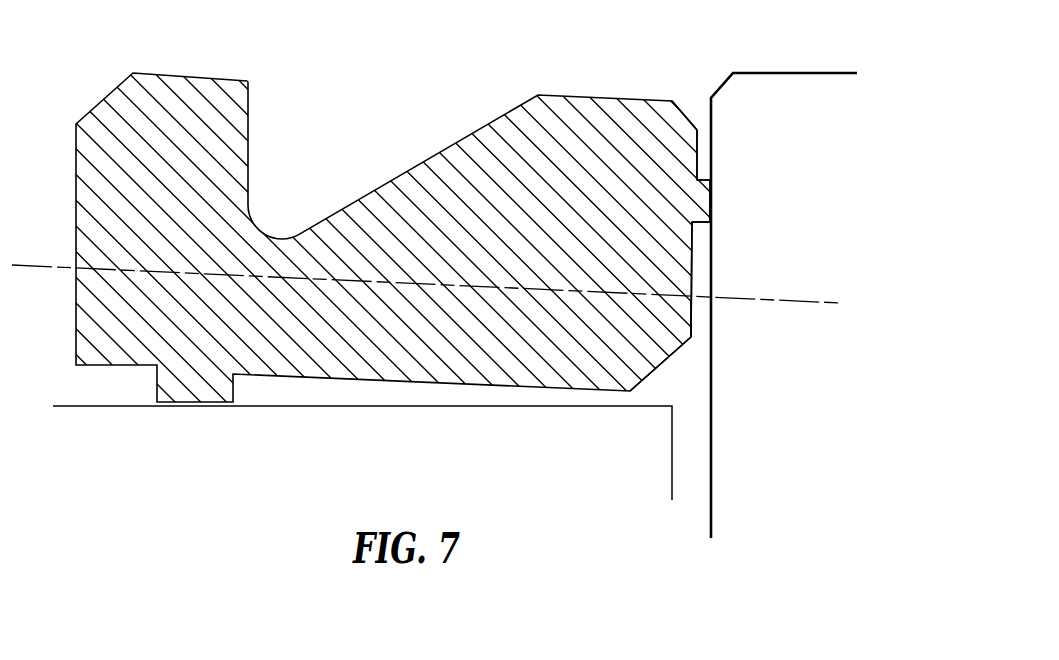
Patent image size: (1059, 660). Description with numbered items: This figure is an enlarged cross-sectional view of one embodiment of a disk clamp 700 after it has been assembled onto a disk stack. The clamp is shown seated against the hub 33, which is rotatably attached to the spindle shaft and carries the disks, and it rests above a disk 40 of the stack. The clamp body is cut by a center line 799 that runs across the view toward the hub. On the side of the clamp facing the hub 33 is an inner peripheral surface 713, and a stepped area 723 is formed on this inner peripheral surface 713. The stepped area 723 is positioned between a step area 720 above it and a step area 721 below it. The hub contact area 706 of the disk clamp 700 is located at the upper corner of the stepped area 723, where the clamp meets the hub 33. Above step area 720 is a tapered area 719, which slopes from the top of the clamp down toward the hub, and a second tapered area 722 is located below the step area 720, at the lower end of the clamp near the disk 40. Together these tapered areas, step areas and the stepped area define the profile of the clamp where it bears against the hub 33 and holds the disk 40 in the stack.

The disk clamp 700 is at (603, 97).
The tapered area 719 is at (678, 130).
The step area 720 is at (685, 158).
The hub contact area 706 is at (713, 183).
The stepped area 723 is at (708, 211).
The step area 721 is at (690, 245).
The inner peripheral surface 713 is at (698, 320).
The tapered area 722 is at (648, 363).
The axis line 799 is at (835, 303).
The hub 33 is at (788, 73).
The disk 40 is at (333, 481).